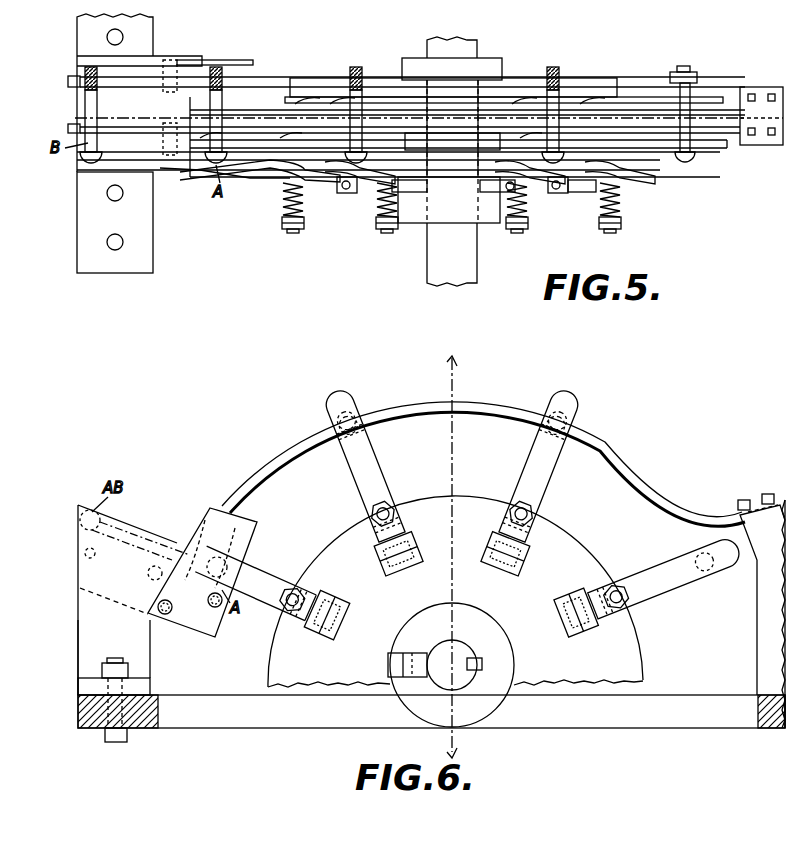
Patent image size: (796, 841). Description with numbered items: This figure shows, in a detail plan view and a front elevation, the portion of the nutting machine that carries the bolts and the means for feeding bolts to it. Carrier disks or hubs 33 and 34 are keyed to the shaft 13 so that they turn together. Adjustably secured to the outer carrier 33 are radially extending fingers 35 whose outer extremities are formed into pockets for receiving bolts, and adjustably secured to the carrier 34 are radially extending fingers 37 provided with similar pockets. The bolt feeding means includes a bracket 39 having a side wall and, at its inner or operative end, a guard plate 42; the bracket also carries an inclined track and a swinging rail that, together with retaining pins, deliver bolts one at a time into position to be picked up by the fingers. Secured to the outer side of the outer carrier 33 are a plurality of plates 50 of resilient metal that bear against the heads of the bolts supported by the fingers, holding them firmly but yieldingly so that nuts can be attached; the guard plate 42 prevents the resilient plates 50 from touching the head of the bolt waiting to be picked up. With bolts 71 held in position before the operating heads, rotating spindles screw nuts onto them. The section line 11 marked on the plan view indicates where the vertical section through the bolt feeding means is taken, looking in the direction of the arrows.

In FIG. 5, the section line 11 is at (75, 118).
In FIG. 5, the shaft 13 is at (472, 255).
In FIG. 6, the shaft 13 is at (462, 676).
In FIG. 6, the outer carrier disk 33 is at (636, 648).
In FIG. 5, the carrier disk 34 is at (512, 78).
In FIG. 5, the radially extending fingers 35 is at (232, 148).
In FIG. 5, the radially extending fingers 37 is at (255, 97).
In FIG. 6, the bracket 39 is at (86, 638).
In FIG. 5, the guard plate 42 is at (240, 62).
In FIG. 5, the resilient plates 50 is at (303, 183).
In FIG. 6, the resilient plates 50 is at (385, 465).
In FIG. 5, the bolts 71 is at (356, 67).
In FIG. 6, the bolts 71 is at (364, 410).